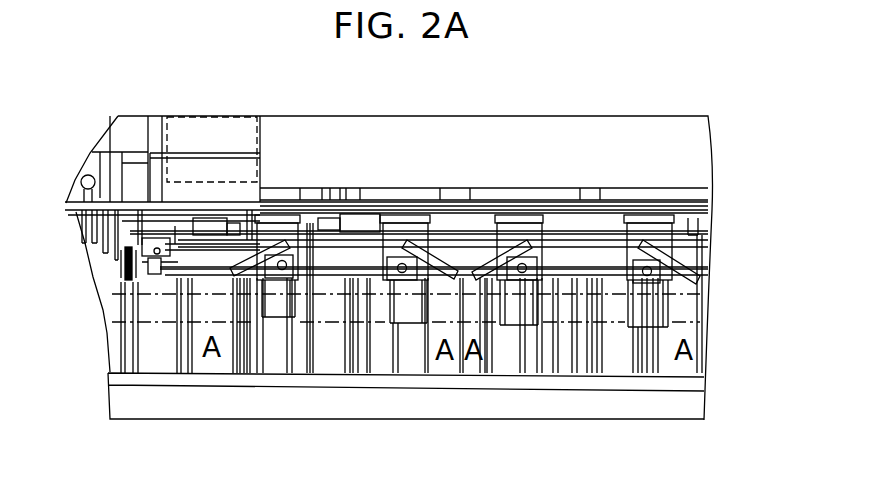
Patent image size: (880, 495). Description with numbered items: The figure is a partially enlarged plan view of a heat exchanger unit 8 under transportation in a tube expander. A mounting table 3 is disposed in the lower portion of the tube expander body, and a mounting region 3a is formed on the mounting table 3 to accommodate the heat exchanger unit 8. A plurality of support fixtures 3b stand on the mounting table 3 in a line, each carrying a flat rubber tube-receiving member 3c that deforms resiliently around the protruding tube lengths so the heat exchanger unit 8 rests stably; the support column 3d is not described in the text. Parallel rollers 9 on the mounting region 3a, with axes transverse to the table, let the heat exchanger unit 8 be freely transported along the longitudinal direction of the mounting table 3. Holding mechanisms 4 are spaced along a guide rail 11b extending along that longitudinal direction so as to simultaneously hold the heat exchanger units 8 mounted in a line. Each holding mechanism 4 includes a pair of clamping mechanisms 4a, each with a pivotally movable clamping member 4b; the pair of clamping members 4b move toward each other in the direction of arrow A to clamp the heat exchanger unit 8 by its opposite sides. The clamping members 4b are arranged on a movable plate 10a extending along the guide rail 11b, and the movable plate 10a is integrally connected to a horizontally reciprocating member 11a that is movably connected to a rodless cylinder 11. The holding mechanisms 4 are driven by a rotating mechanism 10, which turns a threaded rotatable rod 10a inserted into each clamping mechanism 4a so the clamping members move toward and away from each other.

The mounting table 3 is at (699, 353).
The mounting region 3a is at (117, 336).
The support fixture 3b is at (273, 352).
The tube-receiving member 3c is at (406, 335).
The frame support column 3d is at (395, 335).
The holding mechanism 4 is at (415, 220).
The clamping mechanism 4a is at (292, 213).
The clamping member 4b is at (257, 222).
The heat exchanger unit 8 is at (360, 342).
The roller 9 is at (242, 373).
The rotating mechanism 10 is at (119, 280).
The movable plate 10a is at (180, 277).
The rodless cylinder 11 is at (214, 194).
The horizontally reciprocating member 11a is at (217, 237).
The guide rail 11b is at (362, 215).